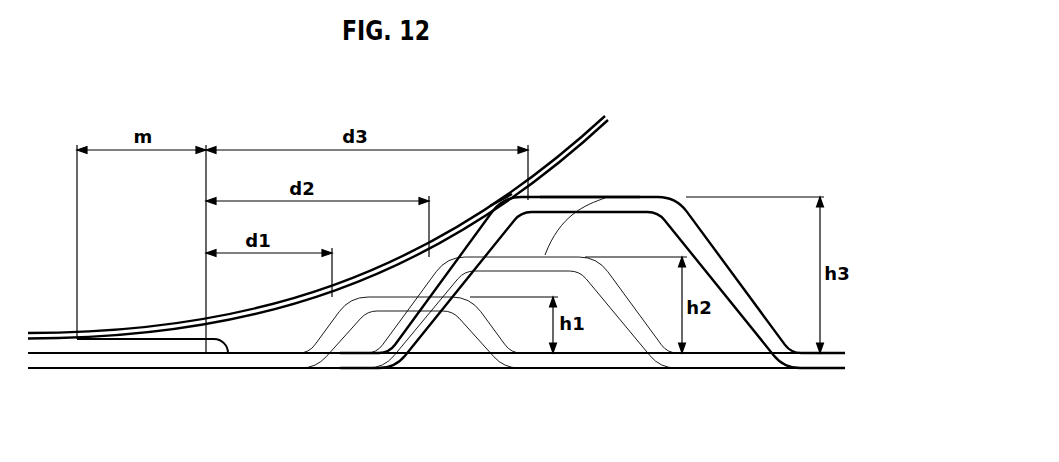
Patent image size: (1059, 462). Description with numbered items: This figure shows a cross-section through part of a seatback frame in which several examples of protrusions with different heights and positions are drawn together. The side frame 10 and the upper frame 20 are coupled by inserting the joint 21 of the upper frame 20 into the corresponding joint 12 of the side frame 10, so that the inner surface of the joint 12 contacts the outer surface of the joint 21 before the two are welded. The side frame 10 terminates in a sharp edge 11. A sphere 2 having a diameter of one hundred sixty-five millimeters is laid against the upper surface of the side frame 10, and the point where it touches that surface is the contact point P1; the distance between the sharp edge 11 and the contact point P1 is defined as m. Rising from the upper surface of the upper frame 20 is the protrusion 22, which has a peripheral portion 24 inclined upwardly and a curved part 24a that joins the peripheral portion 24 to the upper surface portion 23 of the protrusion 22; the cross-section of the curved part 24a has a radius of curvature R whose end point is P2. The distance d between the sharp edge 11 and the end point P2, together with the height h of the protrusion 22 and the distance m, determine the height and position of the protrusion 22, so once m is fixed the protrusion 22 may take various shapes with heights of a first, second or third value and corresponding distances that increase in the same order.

The sphere 2 is at (577, 133).
The peripheral portion 24 is at (428, 245).
The curved part 24a is at (499, 199).
The upper frame 20 is at (841, 345).
The protrusion 22 is at (713, 247).
The upper surface portion 23 is at (617, 197).
The side frame 10 is at (65, 358).
The joint 21 is at (125, 362).
The joint 12 is at (173, 339).
The sharp edge 11 is at (222, 356).
The contact point P1 is at (77, 338).
The end point of the radius of curvature P2 is at (530, 200).